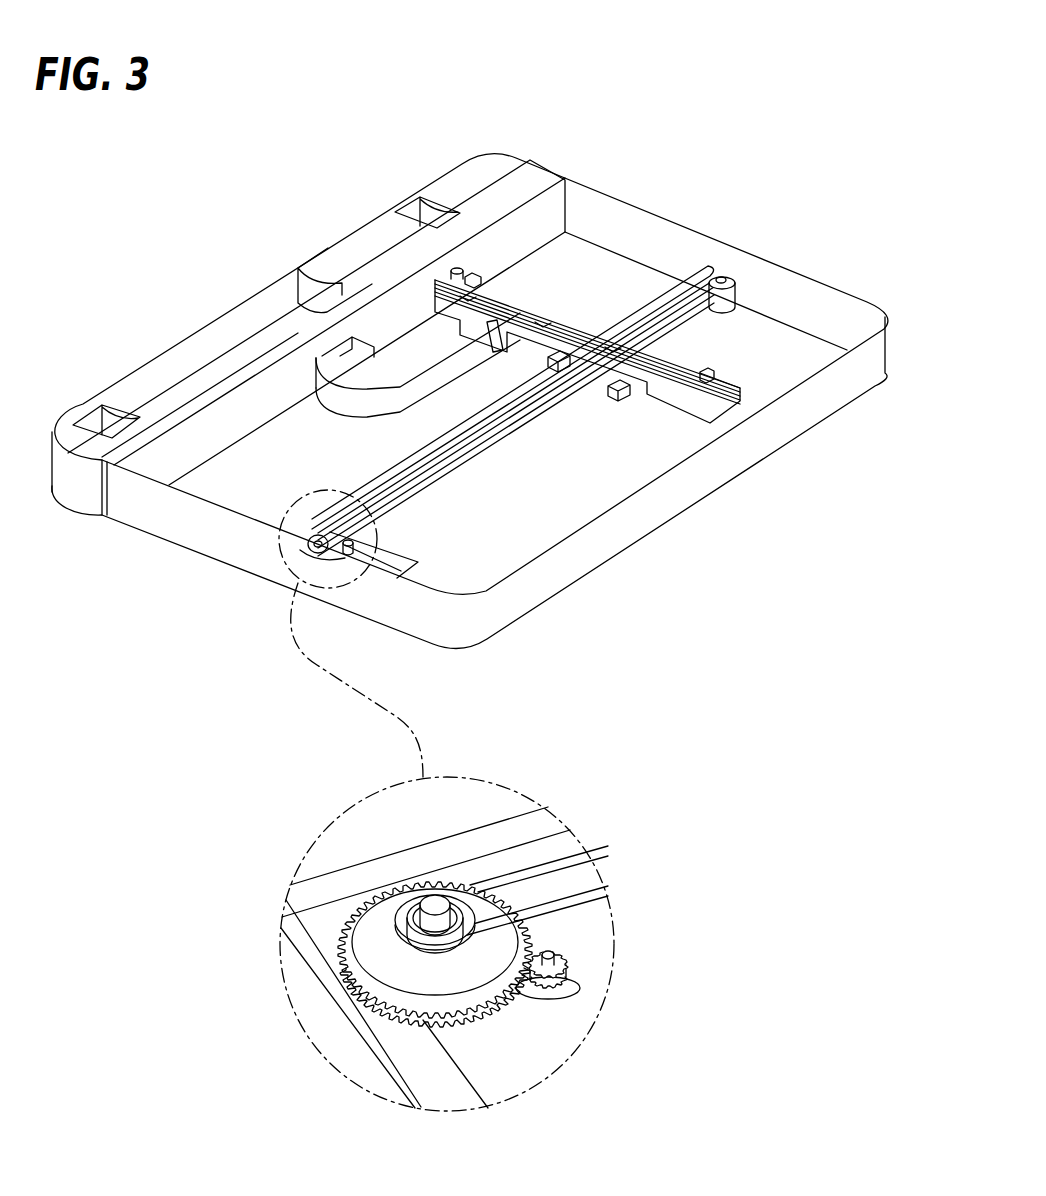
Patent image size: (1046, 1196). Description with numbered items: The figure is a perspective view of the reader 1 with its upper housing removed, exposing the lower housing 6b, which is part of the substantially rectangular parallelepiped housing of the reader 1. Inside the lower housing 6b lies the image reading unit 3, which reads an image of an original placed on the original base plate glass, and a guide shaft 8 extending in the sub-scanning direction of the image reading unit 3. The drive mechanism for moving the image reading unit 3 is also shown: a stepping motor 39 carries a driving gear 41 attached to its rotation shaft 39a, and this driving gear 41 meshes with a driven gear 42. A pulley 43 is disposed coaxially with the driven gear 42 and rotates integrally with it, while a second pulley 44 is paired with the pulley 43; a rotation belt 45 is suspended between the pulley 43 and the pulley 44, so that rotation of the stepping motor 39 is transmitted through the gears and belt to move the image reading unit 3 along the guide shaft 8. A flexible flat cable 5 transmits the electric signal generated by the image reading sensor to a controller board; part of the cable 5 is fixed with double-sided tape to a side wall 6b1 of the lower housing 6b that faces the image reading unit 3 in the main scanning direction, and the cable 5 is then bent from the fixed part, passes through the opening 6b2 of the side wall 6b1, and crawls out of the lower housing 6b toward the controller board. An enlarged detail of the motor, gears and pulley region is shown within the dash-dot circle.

The reader 1 is at (240, 280).
The image reading unit 3 is at (540, 312).
The flexible flat cable 5 is at (352, 402).
The lower housing 6b is at (672, 500).
The side wall 6b1 is at (202, 438).
The opening 6b2 is at (373, 352).
The guide shaft 8 is at (392, 470).
The stepping motor 39 is at (548, 958).
The rotation shaft 39a is at (556, 952).
The driving gear 41 is at (570, 955).
The driven gear 42 is at (373, 940).
The pulley 43 is at (410, 900).
The pulley 44 is at (722, 278).
The rotation belt 45 is at (498, 440).